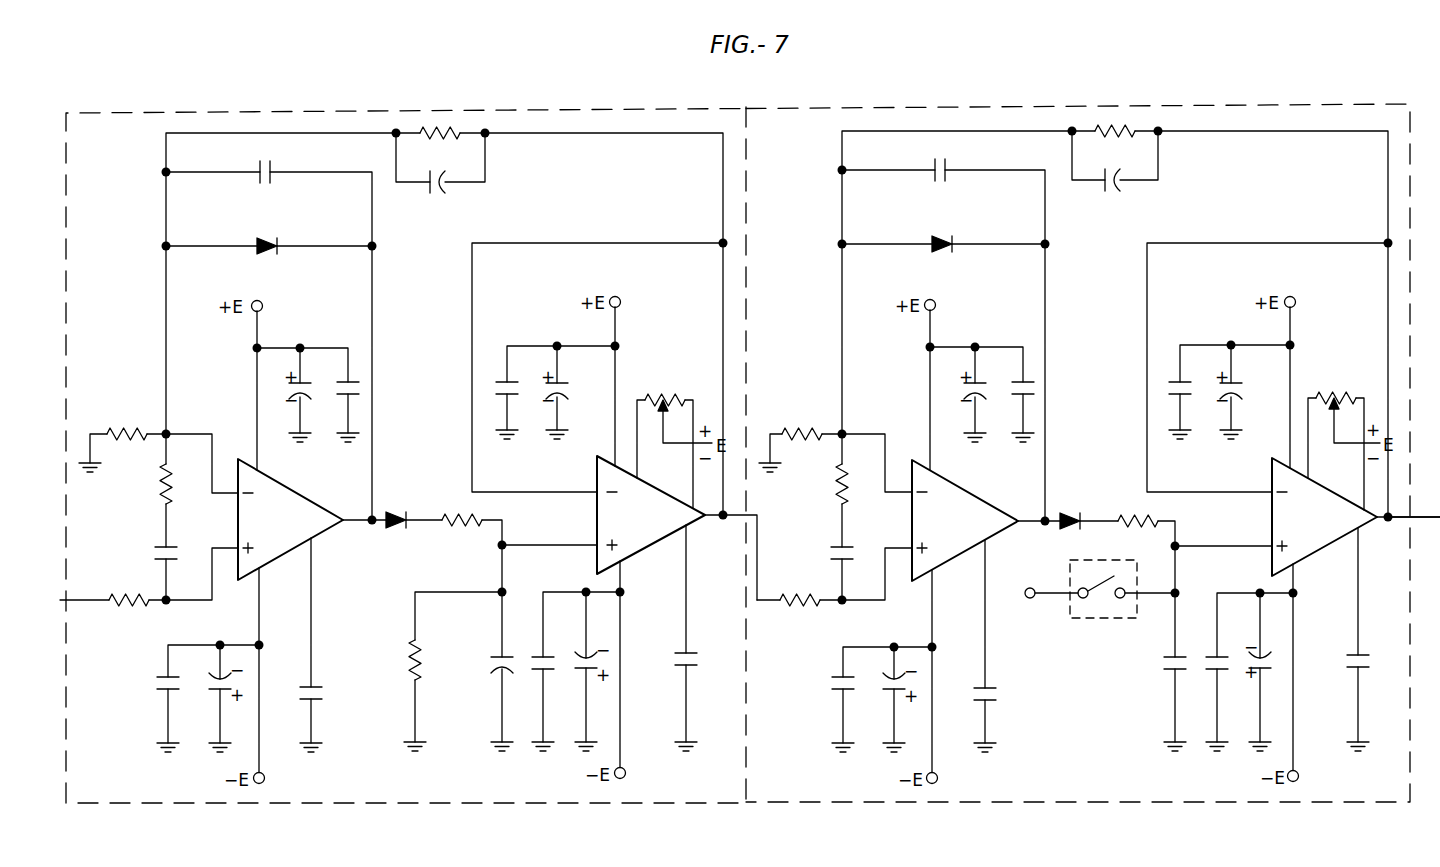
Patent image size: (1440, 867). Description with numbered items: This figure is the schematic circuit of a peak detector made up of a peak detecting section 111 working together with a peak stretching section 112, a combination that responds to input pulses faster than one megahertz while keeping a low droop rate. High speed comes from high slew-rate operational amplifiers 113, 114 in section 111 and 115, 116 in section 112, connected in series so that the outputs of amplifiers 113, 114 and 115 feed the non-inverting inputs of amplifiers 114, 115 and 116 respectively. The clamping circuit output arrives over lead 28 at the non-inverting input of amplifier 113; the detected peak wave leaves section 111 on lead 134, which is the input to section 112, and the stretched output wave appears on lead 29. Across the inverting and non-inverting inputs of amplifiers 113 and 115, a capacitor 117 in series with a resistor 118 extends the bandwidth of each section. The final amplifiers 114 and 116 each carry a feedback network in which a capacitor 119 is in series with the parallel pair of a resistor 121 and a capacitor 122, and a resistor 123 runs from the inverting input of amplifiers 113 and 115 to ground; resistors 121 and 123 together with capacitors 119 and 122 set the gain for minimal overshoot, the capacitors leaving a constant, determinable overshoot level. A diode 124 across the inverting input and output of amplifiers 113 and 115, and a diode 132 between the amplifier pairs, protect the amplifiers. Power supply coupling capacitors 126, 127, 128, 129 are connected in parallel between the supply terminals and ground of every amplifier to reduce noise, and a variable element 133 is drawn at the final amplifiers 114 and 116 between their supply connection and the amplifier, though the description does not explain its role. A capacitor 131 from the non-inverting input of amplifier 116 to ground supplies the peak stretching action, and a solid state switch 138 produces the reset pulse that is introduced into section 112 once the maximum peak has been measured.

The lead 28 is at (91, 602).
The lead 29 is at (1408, 522).
The peak detecting section 111 is at (122, 166).
The peak stretching section 112 is at (798, 164).
The operational amplifier 113 is at (308, 499).
The operational amplifier 114 is at (597, 480).
The operational amplifier 115 is at (983, 499).
The operational amplifier 116 is at (1272, 480).
The capacitor 117 is at (159, 548).
The resistor 118 is at (160, 488).
The capacitor 119 is at (274, 168).
The resistor 121 is at (448, 140).
The capacitor 122 is at (430, 189).
The resistor 123 is at (127, 428).
The diode 124 is at (277, 244).
The power supply coupling capacitor 126 is at (311, 383).
The power supply coupling capacitor 127 is at (357, 383).
The power supply coupling capacitor 128 is at (161, 693).
The power supply coupling capacitor 129 is at (216, 693).
The capacitor 131 is at (1172, 672).
The diode 132 is at (393, 512).
The potentiometer 133 is at (660, 394).
The lead 134 is at (757, 569).
The solid state switch 138 is at (1097, 619).